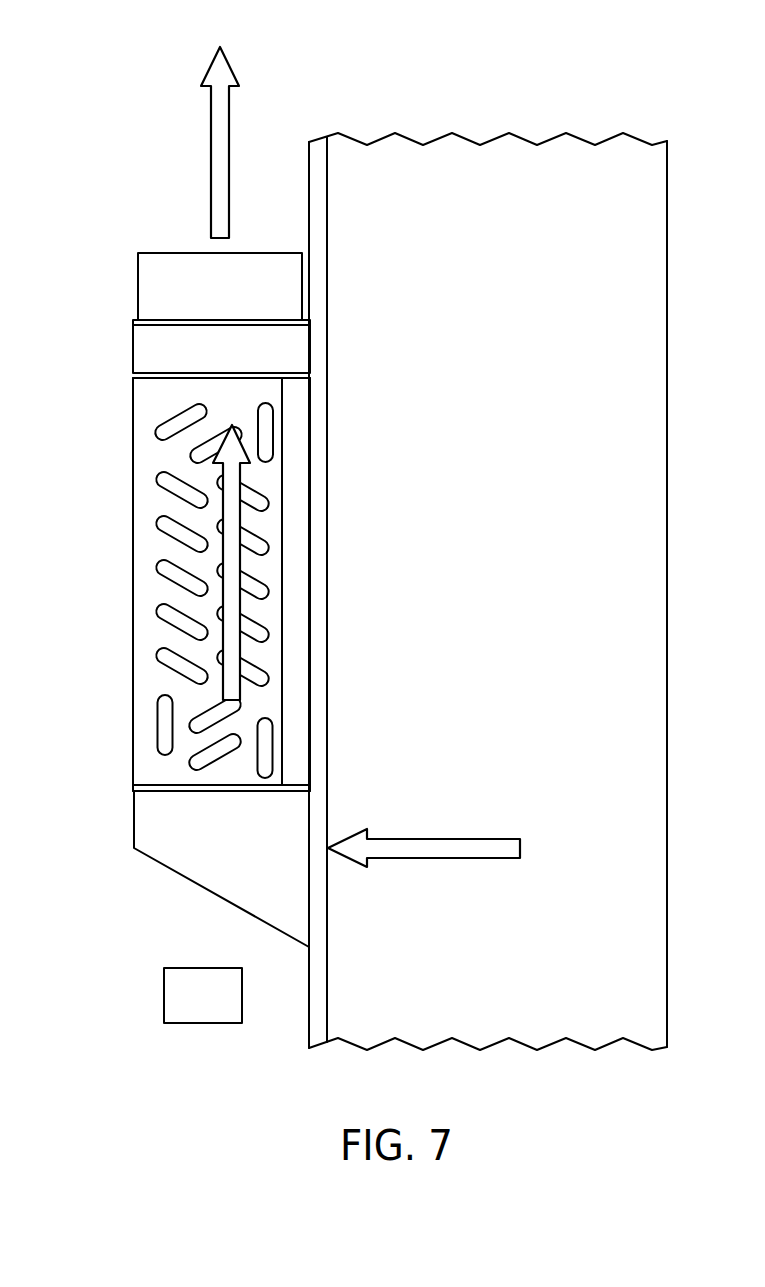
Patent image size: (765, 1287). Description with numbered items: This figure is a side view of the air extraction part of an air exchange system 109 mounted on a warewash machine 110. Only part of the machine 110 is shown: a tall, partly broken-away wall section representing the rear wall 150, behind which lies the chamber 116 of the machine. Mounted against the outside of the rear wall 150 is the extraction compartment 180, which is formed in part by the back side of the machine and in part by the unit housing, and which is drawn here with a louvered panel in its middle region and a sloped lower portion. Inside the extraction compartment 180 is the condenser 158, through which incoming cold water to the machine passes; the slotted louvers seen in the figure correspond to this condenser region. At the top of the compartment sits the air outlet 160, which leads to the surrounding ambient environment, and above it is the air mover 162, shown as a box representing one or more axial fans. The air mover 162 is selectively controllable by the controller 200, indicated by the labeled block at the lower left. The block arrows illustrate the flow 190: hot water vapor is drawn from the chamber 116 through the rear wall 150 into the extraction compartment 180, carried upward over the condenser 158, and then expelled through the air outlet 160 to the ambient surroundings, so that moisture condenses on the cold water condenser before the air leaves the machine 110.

The air exchange system 109 is at (180, 552).
The warewash machine 110 is at (488, 529).
The chamber 116 is at (508, 527).
The rear wall 150 is at (318, 298).
The condenser 158 is at (160, 527).
The air outlet 160 is at (224, 321).
The air mover 162 is at (138, 285).
The extraction compartment 180 is at (139, 811).
The flow 190 is at (211, 163).
The controller 200 is at (228, 1009).